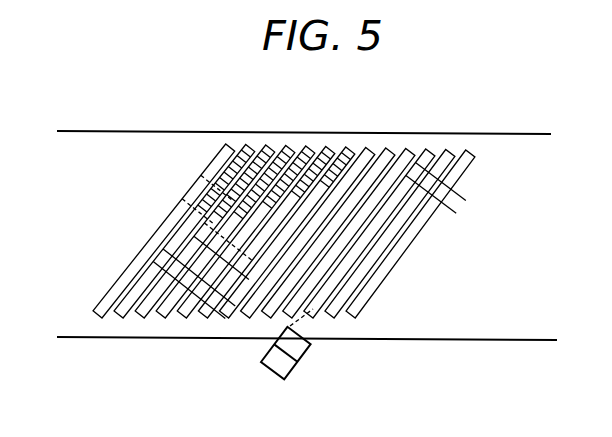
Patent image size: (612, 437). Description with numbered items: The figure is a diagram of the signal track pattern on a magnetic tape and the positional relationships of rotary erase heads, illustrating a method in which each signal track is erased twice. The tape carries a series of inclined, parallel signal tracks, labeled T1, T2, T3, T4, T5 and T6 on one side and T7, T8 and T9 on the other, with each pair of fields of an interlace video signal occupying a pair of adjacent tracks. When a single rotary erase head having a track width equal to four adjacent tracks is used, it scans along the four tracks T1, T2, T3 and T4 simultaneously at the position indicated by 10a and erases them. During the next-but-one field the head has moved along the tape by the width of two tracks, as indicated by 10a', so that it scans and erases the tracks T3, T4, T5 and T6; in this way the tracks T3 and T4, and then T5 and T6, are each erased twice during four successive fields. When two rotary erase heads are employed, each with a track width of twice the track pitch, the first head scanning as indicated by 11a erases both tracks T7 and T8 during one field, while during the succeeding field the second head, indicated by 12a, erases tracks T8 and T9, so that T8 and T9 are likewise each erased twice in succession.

The rotary erase head scanning position 10a is at (162, 271).
The shifted rotary erase head scanning position 10a' is at (227, 187).
The first rotary erase head scanning position 11a is at (432, 177).
The second rotary erase head scanning position 12a is at (274, 371).
The signal track T1 is at (201, 315).
The signal track T2 is at (180, 315).
The signal track T3 is at (159, 315).
The signal track T4 is at (138, 315).
The signal track T5 is at (117, 315).
The signal track T6 is at (96, 315).
The signal track T7 is at (350, 315).
The signal track T8 is at (336, 316).
The signal track T9 is at (314, 316).